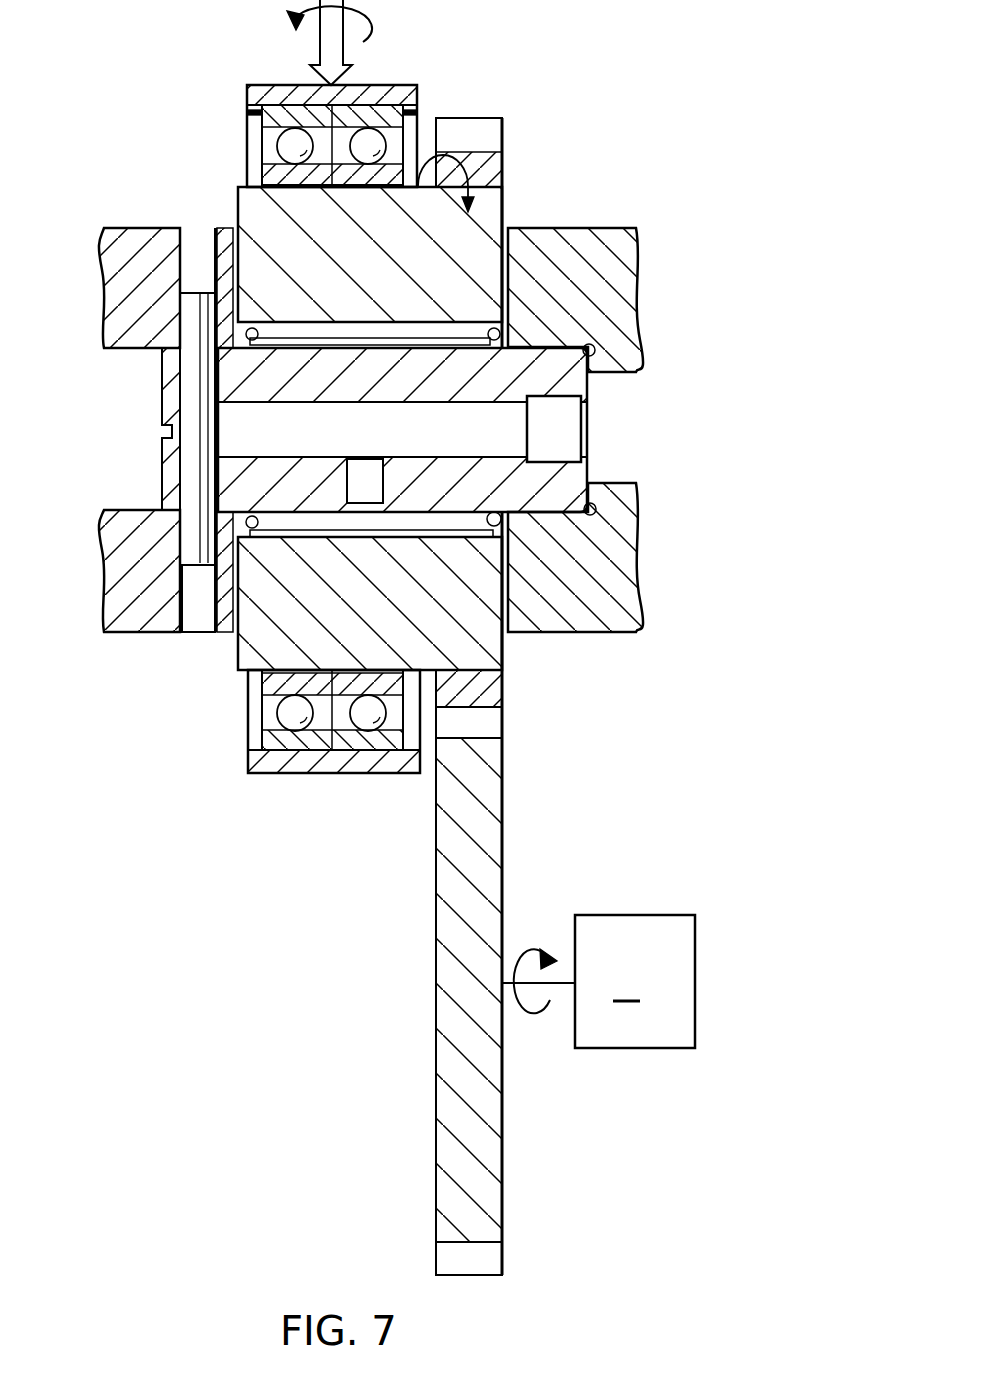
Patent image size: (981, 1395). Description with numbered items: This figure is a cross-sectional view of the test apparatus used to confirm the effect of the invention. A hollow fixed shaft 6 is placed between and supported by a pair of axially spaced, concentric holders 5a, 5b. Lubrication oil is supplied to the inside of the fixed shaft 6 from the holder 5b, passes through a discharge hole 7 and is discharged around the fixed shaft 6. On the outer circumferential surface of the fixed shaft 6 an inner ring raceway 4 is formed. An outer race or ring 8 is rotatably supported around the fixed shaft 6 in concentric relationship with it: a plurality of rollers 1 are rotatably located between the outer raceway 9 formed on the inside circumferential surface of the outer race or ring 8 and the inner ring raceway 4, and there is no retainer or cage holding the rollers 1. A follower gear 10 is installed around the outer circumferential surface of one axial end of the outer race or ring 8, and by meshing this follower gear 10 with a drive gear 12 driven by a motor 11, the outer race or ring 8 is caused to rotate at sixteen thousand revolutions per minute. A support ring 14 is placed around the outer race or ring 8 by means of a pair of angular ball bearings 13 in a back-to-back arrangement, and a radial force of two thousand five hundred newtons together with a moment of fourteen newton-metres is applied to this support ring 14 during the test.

The rollers 1 is at (468, 332).
The inner ring raceway 4 is at (500, 523).
The concentric holder 5a is at (140, 240).
The concentric holder 5b is at (608, 234).
The hollow fixed shaft 6 is at (215, 631).
The discharge hole 7 is at (380, 495).
The outer race or ring 8 is at (255, 213).
The outer raceway 9 is at (272, 497).
The follower gear 10 is at (497, 690).
The motor 11 is at (686, 961).
The drive gear 12 is at (490, 818).
The angular ball bearings 13 is at (372, 136).
The support ring 14 is at (292, 92).